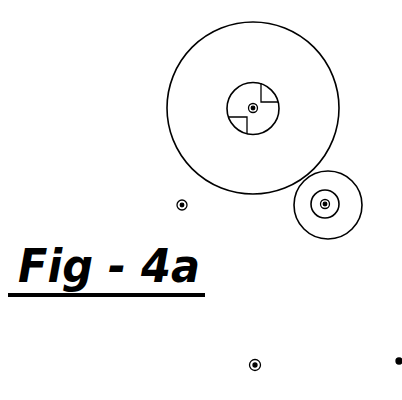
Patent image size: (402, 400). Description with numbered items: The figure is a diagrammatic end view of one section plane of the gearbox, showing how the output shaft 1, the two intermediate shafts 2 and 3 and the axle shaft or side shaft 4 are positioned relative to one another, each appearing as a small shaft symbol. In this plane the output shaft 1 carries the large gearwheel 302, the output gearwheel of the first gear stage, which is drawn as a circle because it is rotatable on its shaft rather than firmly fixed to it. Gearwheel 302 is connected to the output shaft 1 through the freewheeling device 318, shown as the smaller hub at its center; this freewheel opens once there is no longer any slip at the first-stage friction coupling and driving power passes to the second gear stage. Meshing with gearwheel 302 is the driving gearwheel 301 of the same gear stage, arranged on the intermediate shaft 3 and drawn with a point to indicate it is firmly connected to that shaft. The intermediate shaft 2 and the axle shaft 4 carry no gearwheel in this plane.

The gearwheel 302 is at (315, 45).
The freewheeling device 318 is at (235, 104).
The driving gearwheel 301 is at (307, 237).
The output shaft 1 is at (272, 110).
The intermediate shaft 2 is at (196, 206).
The intermediate shaft 3 is at (338, 205).
The axle shaft 4 is at (265, 367).